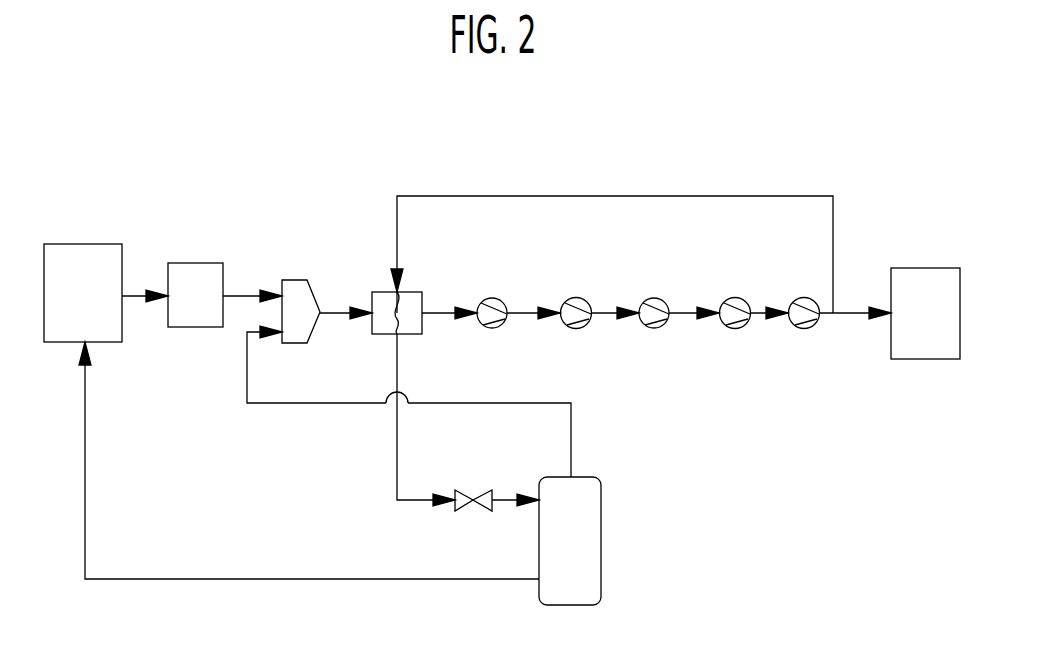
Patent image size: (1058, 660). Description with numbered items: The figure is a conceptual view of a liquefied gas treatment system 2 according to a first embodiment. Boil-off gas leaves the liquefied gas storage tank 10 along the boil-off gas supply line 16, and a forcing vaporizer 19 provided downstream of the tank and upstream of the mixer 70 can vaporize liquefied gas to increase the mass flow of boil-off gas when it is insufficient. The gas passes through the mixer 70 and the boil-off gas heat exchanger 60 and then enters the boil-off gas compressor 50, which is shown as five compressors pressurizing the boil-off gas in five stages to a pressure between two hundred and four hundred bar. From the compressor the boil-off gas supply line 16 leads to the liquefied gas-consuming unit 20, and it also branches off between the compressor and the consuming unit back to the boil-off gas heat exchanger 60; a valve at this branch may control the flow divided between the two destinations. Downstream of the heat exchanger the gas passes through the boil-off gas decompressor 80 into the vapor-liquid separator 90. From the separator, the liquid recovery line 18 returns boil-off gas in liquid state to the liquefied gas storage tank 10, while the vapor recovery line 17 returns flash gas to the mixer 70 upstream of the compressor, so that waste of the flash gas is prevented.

The liquefied gas treatment system 2 is at (134, 122).
The liquefied gas storage tank 10 is at (75, 244).
The forcing vaporizer 19 is at (192, 263).
The mixer 70 is at (295, 280).
The boil-off gas heat exchanger 60 is at (380, 292).
The boil-off gas compressor 50 is at (500, 299).
The liquefied gas-consuming unit 20 is at (930, 268).
The boil-off gas supply line 16 is at (848, 318).
The vapor recovery line 17 is at (292, 404).
The liquid recovery line 18 is at (348, 580).
The boil-off gas decompressor 80 is at (475, 511).
The vapor-liquid separator 90 is at (601, 533).